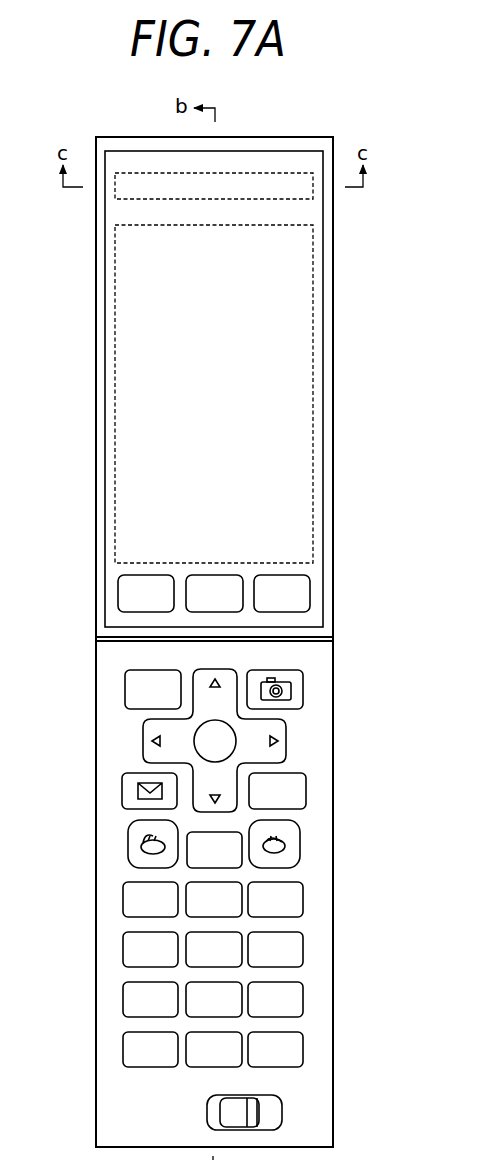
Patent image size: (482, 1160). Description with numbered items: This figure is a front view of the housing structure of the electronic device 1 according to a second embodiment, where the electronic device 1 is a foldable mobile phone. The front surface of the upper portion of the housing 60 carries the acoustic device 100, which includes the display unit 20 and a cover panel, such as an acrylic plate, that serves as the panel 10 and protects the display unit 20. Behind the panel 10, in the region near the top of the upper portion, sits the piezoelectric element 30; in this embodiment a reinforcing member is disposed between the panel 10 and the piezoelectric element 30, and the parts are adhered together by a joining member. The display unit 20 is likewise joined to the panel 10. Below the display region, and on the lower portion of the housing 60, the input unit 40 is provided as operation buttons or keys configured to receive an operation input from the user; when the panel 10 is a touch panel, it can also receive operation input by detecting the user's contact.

The electronic device 1 is at (170, 132).
The housing 60 is at (96, 292).
The acoustic device 100 is at (404, 226).
The panel 10 is at (325, 348).
The display unit 20 is at (313, 400).
The piezoelectric element 30 is at (313, 193).
The input unit 40 is at (290, 594).